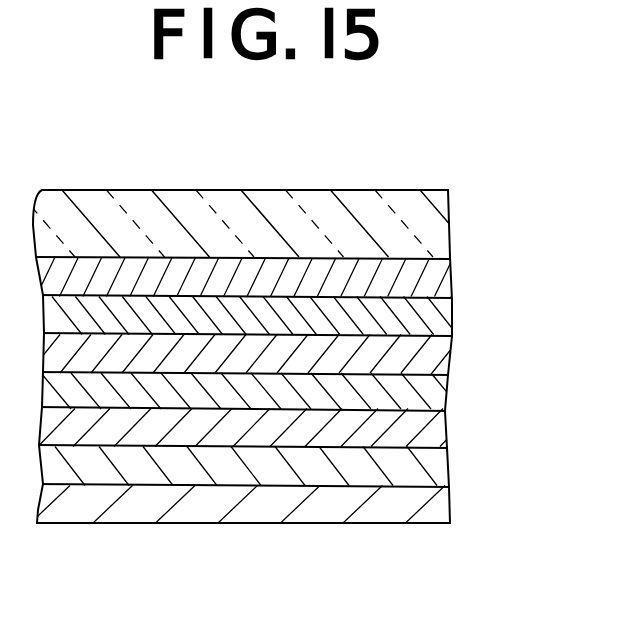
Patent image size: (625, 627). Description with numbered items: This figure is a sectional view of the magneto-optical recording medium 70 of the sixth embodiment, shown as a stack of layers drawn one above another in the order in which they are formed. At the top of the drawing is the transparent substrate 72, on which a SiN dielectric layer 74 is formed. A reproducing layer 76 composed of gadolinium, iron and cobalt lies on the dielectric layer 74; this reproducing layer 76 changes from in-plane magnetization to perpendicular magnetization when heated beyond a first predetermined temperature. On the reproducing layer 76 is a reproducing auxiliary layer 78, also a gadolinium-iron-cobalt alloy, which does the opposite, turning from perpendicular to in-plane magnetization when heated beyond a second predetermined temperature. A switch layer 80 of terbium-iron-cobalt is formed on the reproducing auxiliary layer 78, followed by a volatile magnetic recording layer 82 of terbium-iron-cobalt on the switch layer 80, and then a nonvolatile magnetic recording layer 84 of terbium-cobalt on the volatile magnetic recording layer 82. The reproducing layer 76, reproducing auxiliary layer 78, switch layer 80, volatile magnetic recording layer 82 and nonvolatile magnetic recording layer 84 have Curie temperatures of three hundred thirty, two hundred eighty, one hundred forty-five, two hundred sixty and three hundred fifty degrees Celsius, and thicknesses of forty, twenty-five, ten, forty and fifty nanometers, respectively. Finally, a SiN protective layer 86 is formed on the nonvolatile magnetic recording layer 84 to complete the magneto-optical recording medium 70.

The magneto-optical recording medium 70 is at (208, 188).
The transparent substrate 72 is at (443, 222).
The SiN dielectric layer 74 is at (444, 280).
The reproducing layer 76 is at (445, 316).
The reproducing auxiliary layer 78 is at (445, 354).
The switch layer 80 is at (445, 392).
The volatile magnetic recording layer 82 is at (445, 429).
The nonvolatile magnetic recording layer 84 is at (445, 467).
The SiN protective layer 86 is at (443, 507).